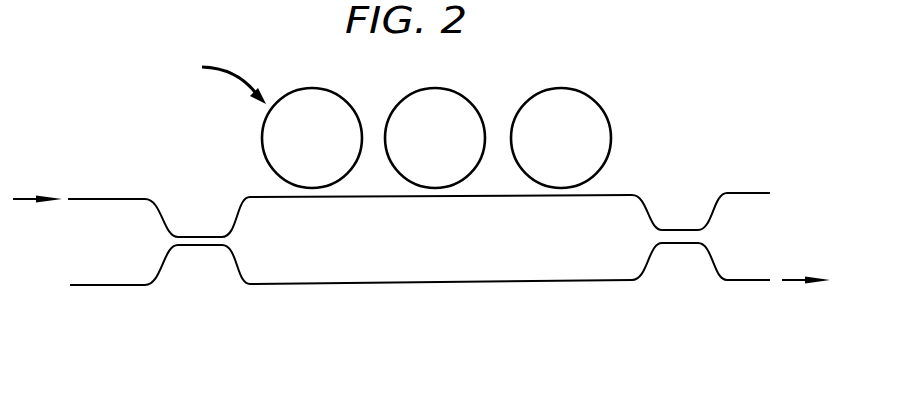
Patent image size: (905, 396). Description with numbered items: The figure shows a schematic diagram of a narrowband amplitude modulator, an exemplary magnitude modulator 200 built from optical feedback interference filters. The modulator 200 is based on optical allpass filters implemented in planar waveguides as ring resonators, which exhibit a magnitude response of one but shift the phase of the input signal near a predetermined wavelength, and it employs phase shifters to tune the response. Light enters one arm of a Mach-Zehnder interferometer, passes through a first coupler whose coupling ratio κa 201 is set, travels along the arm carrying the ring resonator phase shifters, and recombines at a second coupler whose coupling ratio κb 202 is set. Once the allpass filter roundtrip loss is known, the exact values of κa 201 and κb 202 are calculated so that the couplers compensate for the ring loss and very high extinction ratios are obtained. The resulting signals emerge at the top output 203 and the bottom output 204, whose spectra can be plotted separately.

The magnitude modulator 200 is at (435, 345).
The coupling ratio κa 201 is at (196, 178).
The coupling ratio κb 202 is at (677, 168).
The top output 203 is at (757, 193).
The bottom output 204 is at (755, 278).